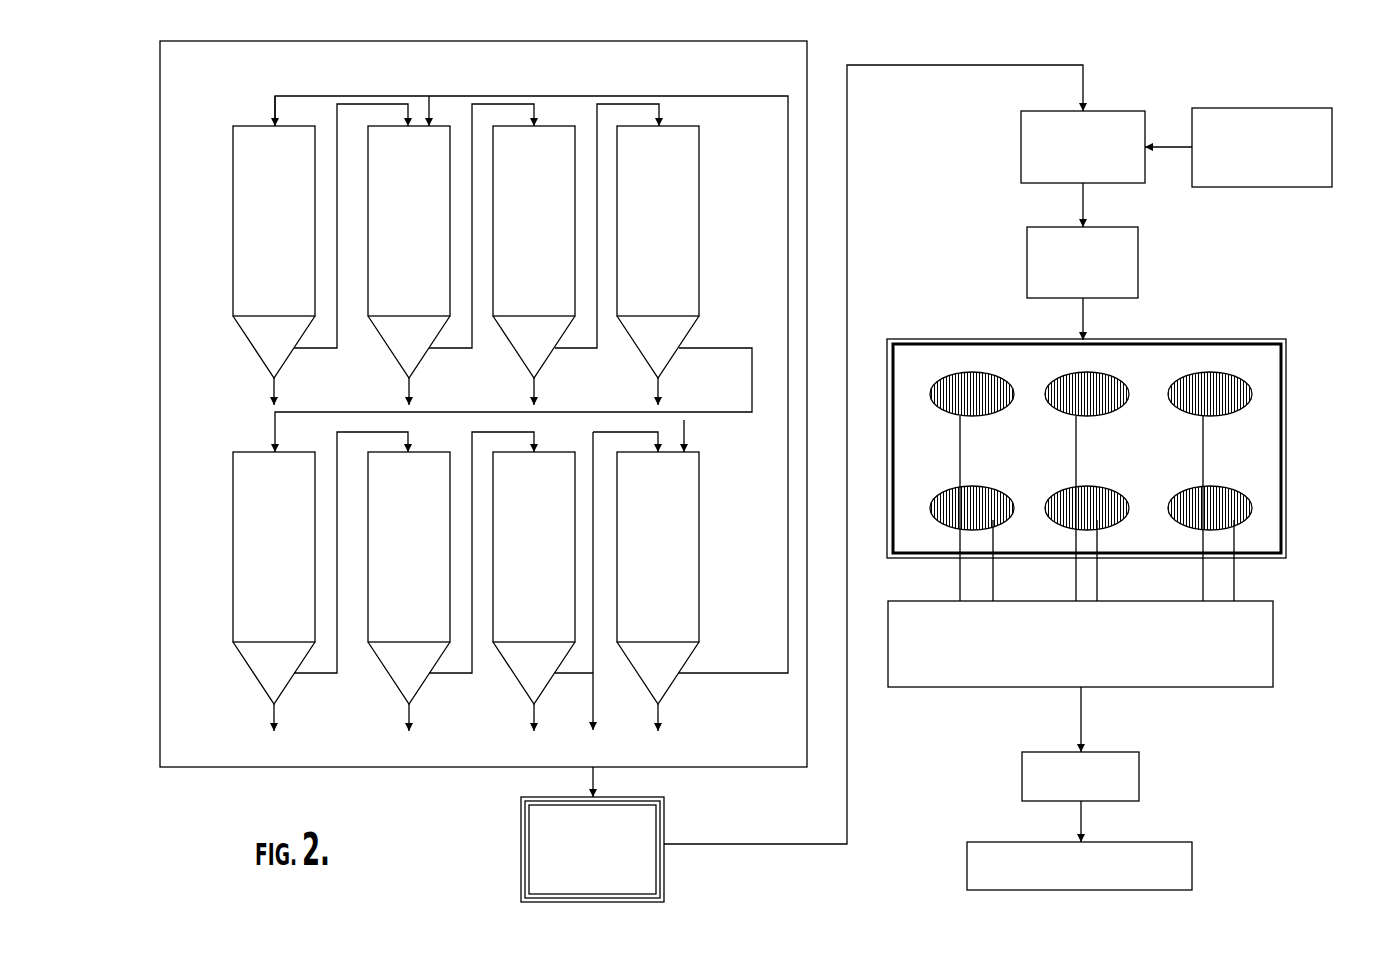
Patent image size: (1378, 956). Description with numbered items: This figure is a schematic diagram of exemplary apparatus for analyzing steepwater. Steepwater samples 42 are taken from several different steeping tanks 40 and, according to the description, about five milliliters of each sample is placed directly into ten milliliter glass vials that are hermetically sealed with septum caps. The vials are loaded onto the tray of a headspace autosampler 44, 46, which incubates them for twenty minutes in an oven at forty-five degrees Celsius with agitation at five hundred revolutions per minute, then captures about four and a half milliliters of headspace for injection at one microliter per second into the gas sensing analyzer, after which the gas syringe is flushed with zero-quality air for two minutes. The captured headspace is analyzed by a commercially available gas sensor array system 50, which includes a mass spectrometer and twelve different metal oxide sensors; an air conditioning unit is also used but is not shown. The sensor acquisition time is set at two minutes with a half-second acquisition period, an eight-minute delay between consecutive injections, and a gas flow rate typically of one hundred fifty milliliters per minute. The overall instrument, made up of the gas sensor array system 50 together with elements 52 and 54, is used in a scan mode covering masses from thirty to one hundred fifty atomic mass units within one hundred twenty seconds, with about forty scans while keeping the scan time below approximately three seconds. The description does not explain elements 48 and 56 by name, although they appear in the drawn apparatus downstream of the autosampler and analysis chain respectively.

The steeping tanks 40 is at (160, 96).
The steepwater samples 42 is at (521, 829).
The headspace autosampler 44 is at (1021, 131).
The headspace autosampler 46 is at (1192, 126).
The injector means 48 is at (1027, 248).
The gas sensor array system 50 is at (1286, 378).
The instrument electronics 52 is at (1273, 625).
The instrument computer 54 is at (1139, 770).
The multivariate analysis 56 is at (1192, 866).